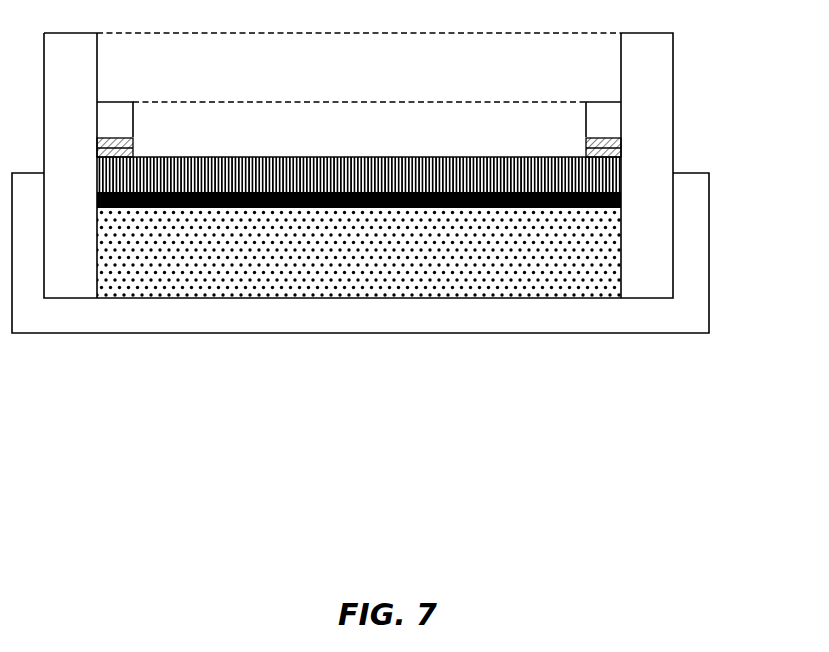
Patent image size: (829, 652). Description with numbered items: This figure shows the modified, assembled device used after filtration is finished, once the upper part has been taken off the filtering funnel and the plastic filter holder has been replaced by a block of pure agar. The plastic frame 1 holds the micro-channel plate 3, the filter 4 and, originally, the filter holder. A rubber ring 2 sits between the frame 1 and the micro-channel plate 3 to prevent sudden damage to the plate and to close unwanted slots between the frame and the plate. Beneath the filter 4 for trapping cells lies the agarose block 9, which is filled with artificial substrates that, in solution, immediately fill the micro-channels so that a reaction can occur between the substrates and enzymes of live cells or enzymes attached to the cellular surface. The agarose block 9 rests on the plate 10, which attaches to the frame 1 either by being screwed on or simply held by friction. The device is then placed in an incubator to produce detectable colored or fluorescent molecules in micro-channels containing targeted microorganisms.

The frame 1 is at (670, 48).
The rubber ring 2 is at (636, 137).
The micro-channel plate 3 is at (623, 172).
The filter 4 is at (620, 191).
The agarose block 9 is at (550, 262).
The plate for agar block 10 is at (671, 314).